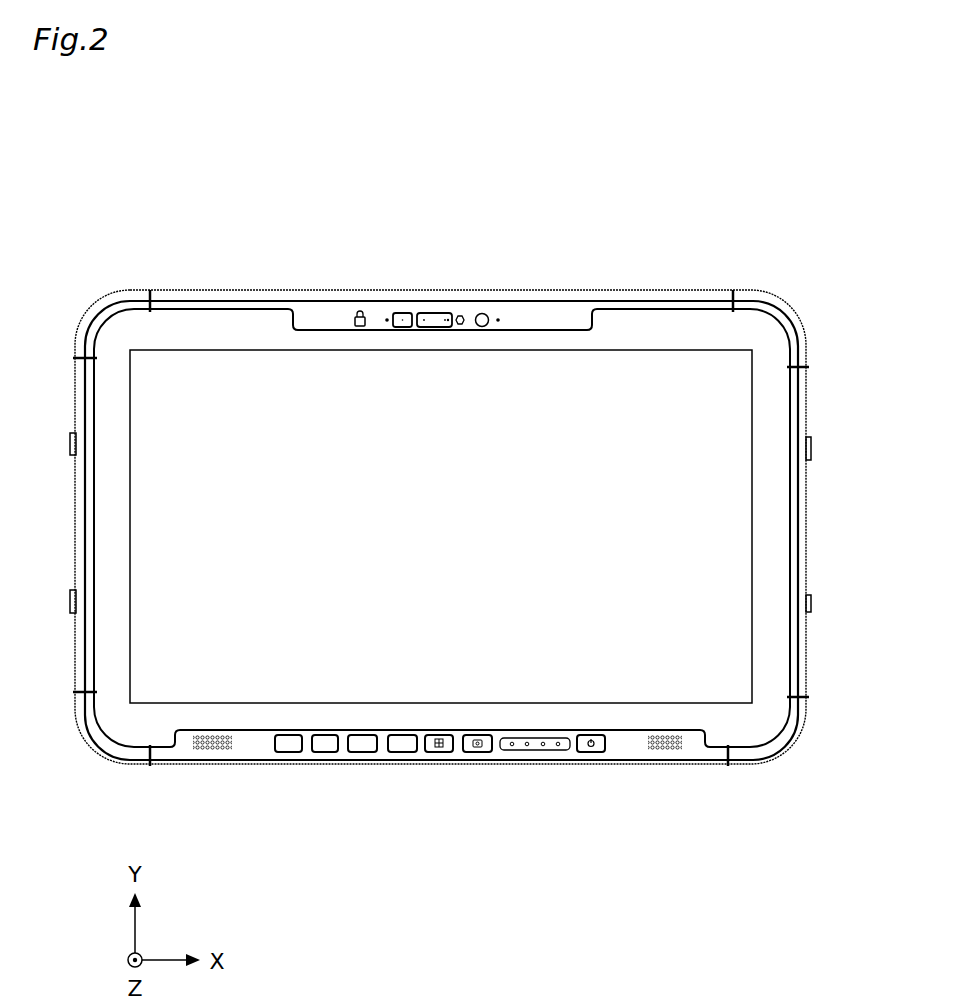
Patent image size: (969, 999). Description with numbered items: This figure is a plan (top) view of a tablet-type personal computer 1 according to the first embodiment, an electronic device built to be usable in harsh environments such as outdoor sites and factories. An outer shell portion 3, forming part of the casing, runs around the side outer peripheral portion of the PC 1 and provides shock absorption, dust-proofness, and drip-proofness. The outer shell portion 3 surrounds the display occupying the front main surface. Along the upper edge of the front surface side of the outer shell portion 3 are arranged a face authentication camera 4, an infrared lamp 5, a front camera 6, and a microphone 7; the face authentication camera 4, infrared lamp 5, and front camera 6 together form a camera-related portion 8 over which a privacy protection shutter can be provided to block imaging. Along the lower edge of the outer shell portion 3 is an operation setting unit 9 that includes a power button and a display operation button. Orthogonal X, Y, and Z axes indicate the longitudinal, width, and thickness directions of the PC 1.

The tablet-type personal computer 1 is at (770, 158).
The outer shell portion 3 is at (789, 311).
The face authentication camera 4 is at (405, 312).
The infrared (IR) lamp 5 is at (430, 312).
The front camera 6 is at (450, 312).
The microphone 7 is at (386, 318).
The camera-related portion 8 is at (385, 228).
The operation setting unit 9 is at (268, 768).